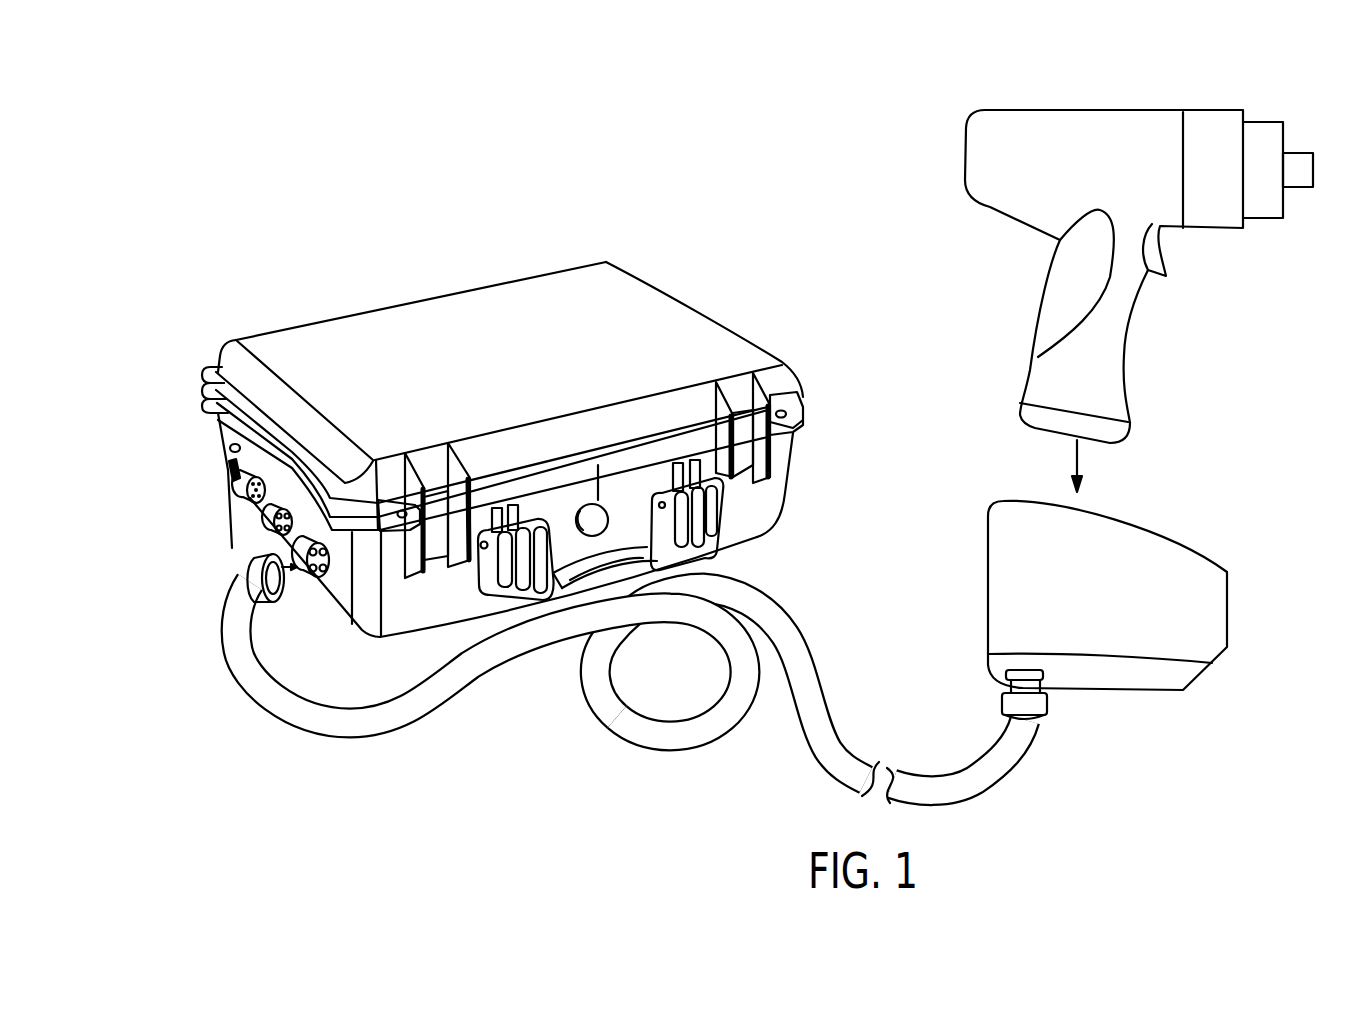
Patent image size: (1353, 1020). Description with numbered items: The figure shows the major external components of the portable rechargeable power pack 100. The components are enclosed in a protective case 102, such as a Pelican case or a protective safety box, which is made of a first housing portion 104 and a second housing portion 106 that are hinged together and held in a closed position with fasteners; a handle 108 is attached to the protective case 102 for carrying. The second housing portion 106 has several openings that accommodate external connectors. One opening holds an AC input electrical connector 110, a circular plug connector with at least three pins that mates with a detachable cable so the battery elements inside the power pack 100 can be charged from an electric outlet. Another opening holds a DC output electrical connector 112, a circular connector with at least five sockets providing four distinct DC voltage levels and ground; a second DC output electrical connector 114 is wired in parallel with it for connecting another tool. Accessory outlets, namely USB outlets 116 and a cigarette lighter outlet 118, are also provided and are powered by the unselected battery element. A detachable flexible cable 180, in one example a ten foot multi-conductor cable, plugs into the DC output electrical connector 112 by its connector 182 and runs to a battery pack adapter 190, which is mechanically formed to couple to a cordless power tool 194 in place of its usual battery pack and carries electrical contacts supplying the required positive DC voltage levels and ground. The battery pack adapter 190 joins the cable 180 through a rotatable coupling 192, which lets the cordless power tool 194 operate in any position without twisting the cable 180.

The portable rechargeable power pack 100 is at (731, 428).
The protective case 102 is at (303, 334).
The first housing portion 104 is at (211, 365).
The second housing portion 106 is at (224, 433).
The handle 108 is at (480, 585).
The AC input electrical connector 110 is at (246, 490).
The DC output electrical connector 112 is at (316, 580).
The second DC output electrical connector 114 is at (268, 518).
The USB outlets 116 is at (230, 464).
The cigarette lighter outlet 118 is at (230, 449).
The detachable flexible cable 180 is at (834, 675).
The connector 182 is at (250, 566).
The battery pack adapter 190 is at (1228, 600).
The rotatable coupling 192 is at (1047, 712).
The cordless power tool 194 is at (1083, 110).